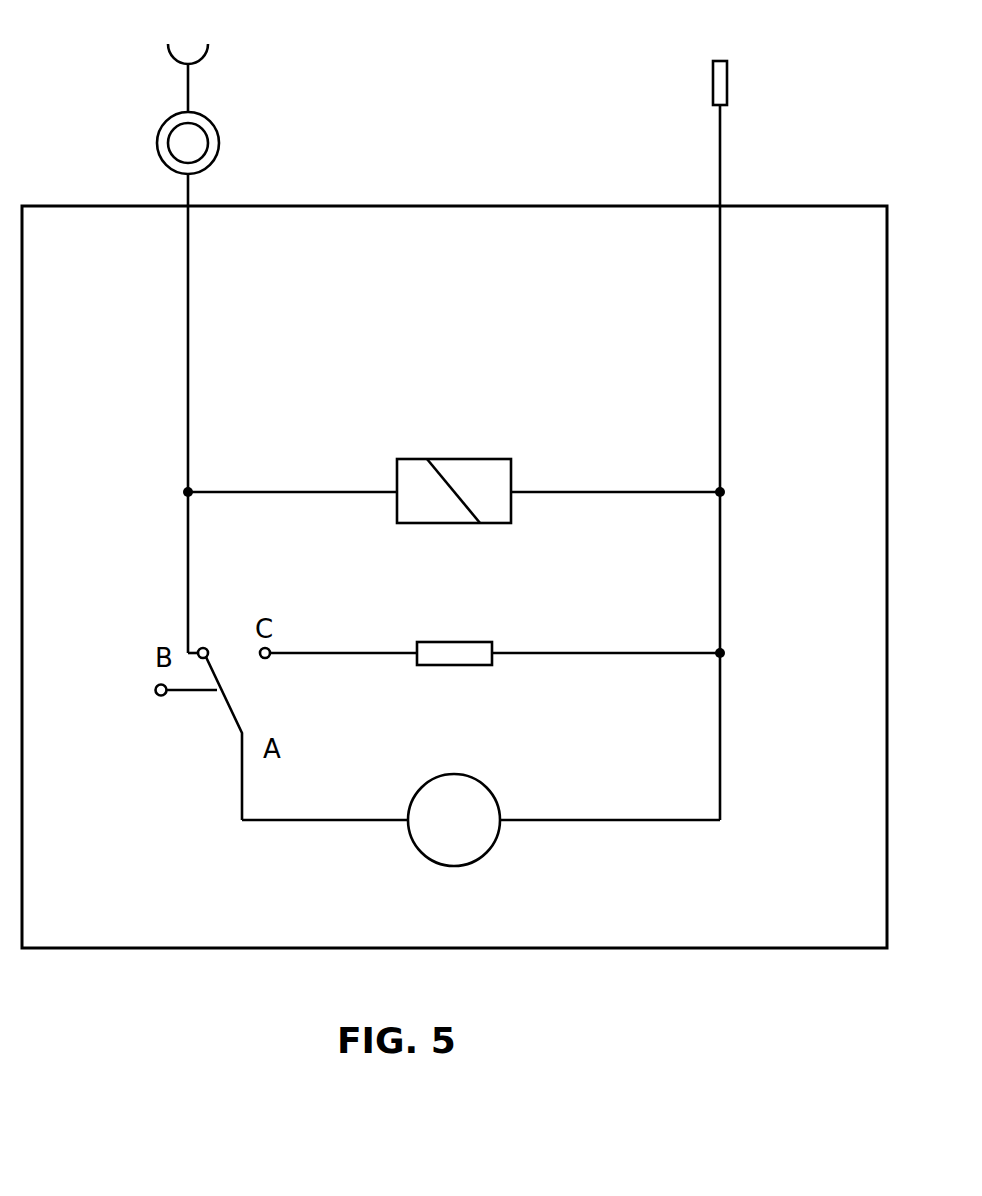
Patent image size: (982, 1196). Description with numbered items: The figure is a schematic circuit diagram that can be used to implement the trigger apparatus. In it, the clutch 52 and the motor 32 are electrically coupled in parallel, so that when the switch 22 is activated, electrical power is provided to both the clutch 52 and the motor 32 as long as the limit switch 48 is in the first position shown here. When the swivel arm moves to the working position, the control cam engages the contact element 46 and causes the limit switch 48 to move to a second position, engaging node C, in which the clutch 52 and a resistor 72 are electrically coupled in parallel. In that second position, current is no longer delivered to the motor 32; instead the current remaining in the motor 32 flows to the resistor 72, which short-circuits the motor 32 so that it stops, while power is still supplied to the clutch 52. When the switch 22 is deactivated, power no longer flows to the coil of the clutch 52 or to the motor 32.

The switch 22 is at (157, 143).
The clutch 52 is at (448, 473).
The resistor 72 is at (448, 650).
The motor 32 is at (457, 848).
The contact element 46 is at (155, 693).
The limit switch 48 is at (200, 708).